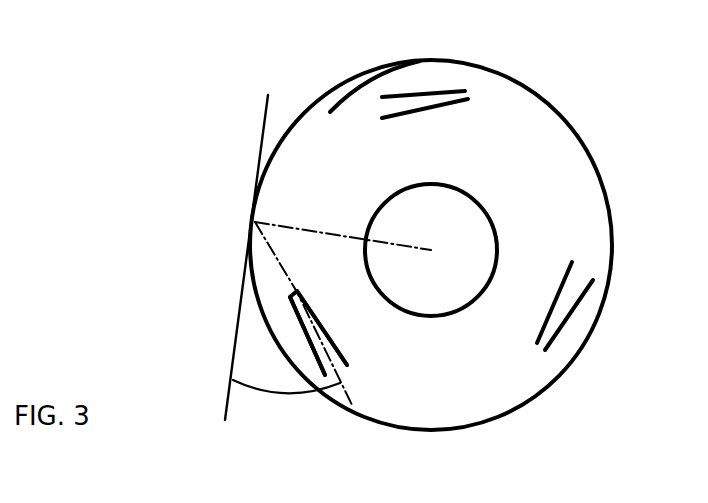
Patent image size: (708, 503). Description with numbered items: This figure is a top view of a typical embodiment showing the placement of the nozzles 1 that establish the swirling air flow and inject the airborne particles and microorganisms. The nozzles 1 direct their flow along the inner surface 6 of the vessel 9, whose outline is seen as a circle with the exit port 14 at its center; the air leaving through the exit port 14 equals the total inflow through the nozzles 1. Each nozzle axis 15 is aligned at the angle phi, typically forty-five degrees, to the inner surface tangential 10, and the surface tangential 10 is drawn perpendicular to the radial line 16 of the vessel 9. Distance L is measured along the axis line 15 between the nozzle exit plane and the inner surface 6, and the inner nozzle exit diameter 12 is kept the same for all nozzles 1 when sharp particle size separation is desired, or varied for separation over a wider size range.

The nozzle 1 is at (400, 93).
The inner surface 6 is at (303, 116).
The vessel 9 is at (605, 190).
The inner surface tangential 10 is at (262, 113).
The inner nozzle exit diameter 12 is at (283, 288).
The exit port 14 is at (488, 210).
The nozzle axis 15 is at (347, 405).
The radial line 16 is at (255, 222).